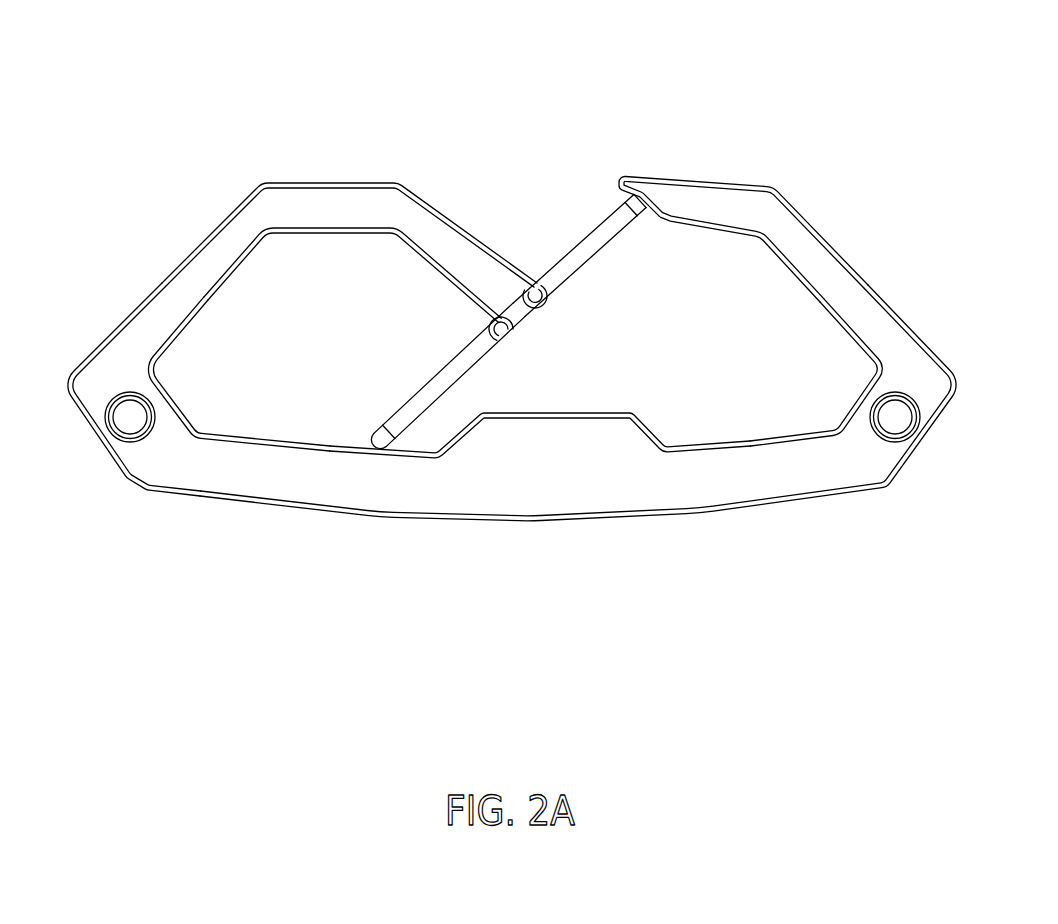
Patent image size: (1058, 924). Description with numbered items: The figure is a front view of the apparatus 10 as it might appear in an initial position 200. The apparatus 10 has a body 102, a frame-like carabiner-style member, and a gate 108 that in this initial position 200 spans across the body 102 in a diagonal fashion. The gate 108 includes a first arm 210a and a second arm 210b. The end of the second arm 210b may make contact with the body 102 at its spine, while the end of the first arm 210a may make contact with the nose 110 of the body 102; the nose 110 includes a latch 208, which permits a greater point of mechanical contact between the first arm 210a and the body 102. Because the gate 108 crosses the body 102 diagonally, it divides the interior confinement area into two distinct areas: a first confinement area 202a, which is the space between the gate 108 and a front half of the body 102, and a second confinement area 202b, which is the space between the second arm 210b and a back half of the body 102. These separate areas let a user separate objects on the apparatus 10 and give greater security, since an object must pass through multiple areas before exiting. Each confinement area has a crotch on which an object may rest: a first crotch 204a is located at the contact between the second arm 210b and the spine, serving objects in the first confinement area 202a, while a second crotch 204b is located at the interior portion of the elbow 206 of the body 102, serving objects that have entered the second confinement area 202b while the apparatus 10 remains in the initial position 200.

The apparatus 10 is at (500, 335).
The body 102 is at (500, 366).
The gate 108 is at (529, 350).
The nose 110 is at (733, 208).
The elbow 206 is at (110, 378).
The latch 208 is at (616, 212).
The first arm 210a is at (600, 195).
The second arm 210b is at (413, 422).
The first confinement area 202a is at (770, 387).
The second confinement area 202b is at (296, 402).
The first crotch 204a is at (487, 385).
The second crotch 204b is at (190, 382).
The initial position 200 is at (500, 372).